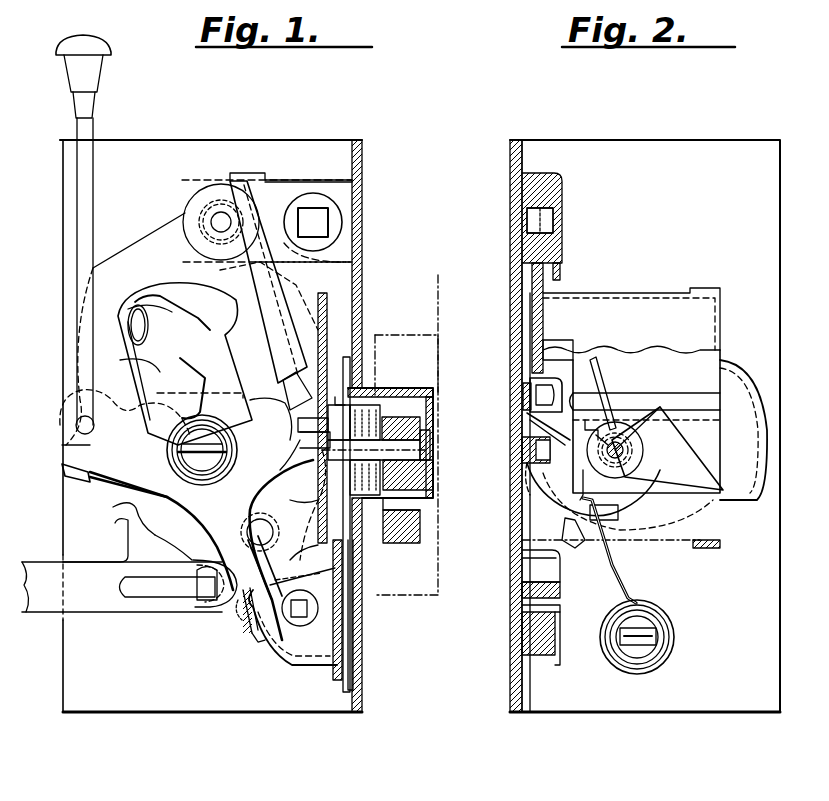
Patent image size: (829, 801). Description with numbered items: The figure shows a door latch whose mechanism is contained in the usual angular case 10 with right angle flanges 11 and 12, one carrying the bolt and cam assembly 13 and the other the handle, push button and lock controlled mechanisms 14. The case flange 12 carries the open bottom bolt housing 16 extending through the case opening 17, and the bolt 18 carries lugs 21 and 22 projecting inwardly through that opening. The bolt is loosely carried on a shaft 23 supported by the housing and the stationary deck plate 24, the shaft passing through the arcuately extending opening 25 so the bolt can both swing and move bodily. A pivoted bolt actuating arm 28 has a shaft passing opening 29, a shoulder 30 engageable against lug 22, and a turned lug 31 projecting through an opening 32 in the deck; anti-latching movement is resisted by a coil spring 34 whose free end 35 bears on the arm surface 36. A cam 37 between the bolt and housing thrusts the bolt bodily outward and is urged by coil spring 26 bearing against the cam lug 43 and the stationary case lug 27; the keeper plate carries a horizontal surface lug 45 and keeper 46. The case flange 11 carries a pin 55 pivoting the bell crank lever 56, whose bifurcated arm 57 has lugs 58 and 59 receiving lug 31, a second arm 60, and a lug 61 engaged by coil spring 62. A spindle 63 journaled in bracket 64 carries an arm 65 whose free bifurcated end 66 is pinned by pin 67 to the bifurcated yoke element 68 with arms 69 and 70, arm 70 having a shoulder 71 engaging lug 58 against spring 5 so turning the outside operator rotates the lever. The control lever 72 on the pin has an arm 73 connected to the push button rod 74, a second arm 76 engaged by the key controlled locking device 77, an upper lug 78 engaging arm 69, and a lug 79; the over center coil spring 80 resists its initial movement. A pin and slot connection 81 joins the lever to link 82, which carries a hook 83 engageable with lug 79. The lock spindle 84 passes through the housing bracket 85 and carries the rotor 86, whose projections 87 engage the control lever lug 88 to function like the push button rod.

In FIG. 1, the spring 5 is at (169, 312).
In FIG. 1, the angular case 10 is at (368, 146).
In FIG. 1, the case flange 11 is at (238, 152).
In FIG. 2, the case flange 11 is at (512, 308).
In FIG. 1, the case flange 12 is at (363, 167).
In FIG. 2, the case flange 12 is at (717, 152).
In FIG. 1, the bolt and cam assembly 13 is at (440, 414).
In FIG. 2, the bolt and cam assembly 13 is at (645, 378).
In FIG. 1, the handle, push button and lock controlled mechanisms 14 is at (85, 495).
In FIG. 1, the bolt housing 16 is at (428, 392).
In FIG. 1, the case opening 17 is at (378, 395).
In FIG. 1, the bolt 18 is at (422, 425).
In FIG. 2, the bolt 18 is at (689, 430).
In FIG. 2, the bolt lug 21 is at (593, 422).
In FIG. 1, the bolt lug 22 is at (420, 505).
In FIG. 2, the bolt lug 22 is at (652, 500).
In FIG. 1, the shaft 23 is at (435, 456).
In FIG. 2, the shaft 23 is at (630, 448).
In FIG. 1, the deck plate 24 is at (318, 528).
In FIG. 2, the deck plate 24 is at (640, 310).
In FIG. 1, the arcuately extending opening 25 is at (430, 440).
In FIG. 1, the coil spring 26 is at (420, 472).
In FIG. 2, the coil spring 26 is at (616, 420).
In FIG. 1, the case lug 27 is at (342, 360).
In FIG. 2, the case lug 27 is at (592, 360).
In FIG. 1, the bolt actuating arm 28 is at (302, 511).
In FIG. 2, the bolt actuating arm 28 is at (540, 498).
In FIG. 1, the shaft passing opening 29 is at (373, 450).
In FIG. 2, the shoulder 30 is at (640, 500).
In FIG. 1, the turned lug 31 is at (298, 425).
In FIG. 2, the turned lug 31 is at (528, 418).
In FIG. 2, the opening 32 is at (560, 340).
In FIG. 1, the coil spring 34 is at (333, 680).
In FIG. 2, the coil spring 34 is at (613, 660).
In FIG. 1, the free end 35 is at (333, 540).
In FIG. 2, the free end 35 is at (605, 556).
In FIG. 2, the arm surface 36 is at (576, 536).
In FIG. 1, the cam 37 is at (400, 395).
In FIG. 2, the cam 37 is at (640, 410).
In FIG. 2, the cam lug 43 is at (587, 485).
In FIG. 1, the horizontal surface lug 45 is at (425, 349).
In FIG. 1, the keeper 46 is at (440, 588).
In FIG. 1, the pin 55 is at (158, 445).
In FIG. 1, the bell crank lever 56 is at (210, 375).
In FIG. 1, the bifurcated arm 57 is at (283, 472).
In FIG. 2, the bifurcated arm 57 is at (527, 478).
In FIG. 1, the lug 58 is at (262, 416).
In FIG. 2, the lug 58 is at (528, 400).
In FIG. 1, the lug 59 is at (300, 440).
In FIG. 2, the lug 59 is at (530, 440).
In FIG. 1, the second arm 60 is at (210, 606).
In FIG. 1, the lug 61 is at (180, 362).
In FIG. 1, the coil spring 62 is at (160, 365).
In FIG. 1, the spindle 63 is at (338, 216).
In FIG. 1, the bracket 64 is at (356, 256).
In FIG. 2, the bracket 64 is at (562, 275).
In FIG. 1, the arm 65 is at (278, 195).
In FIG. 1, the free bifurcated end 66 is at (208, 190).
In FIG. 2, the free bifurcated end 66 is at (518, 197).
In FIG. 1, the pin 67 is at (215, 218).
In FIG. 2, the pin 67 is at (550, 221).
In FIG. 1, the bifurcated yoke element 68 is at (155, 236).
In FIG. 1, the arm 69 is at (184, 364).
In FIG. 1, the arm 70 is at (268, 282).
In FIG. 2, the arm 70 is at (532, 326).
In FIG. 1, the shoulder 71 is at (292, 368).
In FIG. 1, the control lever 72 is at (157, 478).
In FIG. 1, the arm 73 is at (64, 446).
In FIG. 1, the push button rod 74 is at (78, 260).
In FIG. 1, the second arm 76 is at (259, 556).
In FIG. 1, the key controlled locking device 77 is at (290, 655).
In FIG. 1, the upper lug 78 is at (262, 385).
In FIG. 1, the lug 79 is at (64, 466).
In FIG. 1, the over center coil spring 80 is at (248, 518).
In FIG. 1, the pin and slot connection 81 is at (192, 598).
In FIG. 1, the link 82 is at (122, 587).
In FIG. 1, the hook 83 is at (95, 540).
In FIG. 1, the spindle 84 is at (304, 616).
In FIG. 2, the spindle 84 is at (525, 606).
In FIG. 1, the housing bracket 85 is at (258, 645).
In FIG. 2, the housing bracket 85 is at (562, 662).
In FIG. 1, the rotor 86 is at (252, 635).
In FIG. 2, the rotor 86 is at (525, 632).
In FIG. 1, the projections 87 is at (240, 622).
In FIG. 2, the projections 87 is at (525, 562).
In FIG. 1, the control lever lug 88 is at (302, 565).